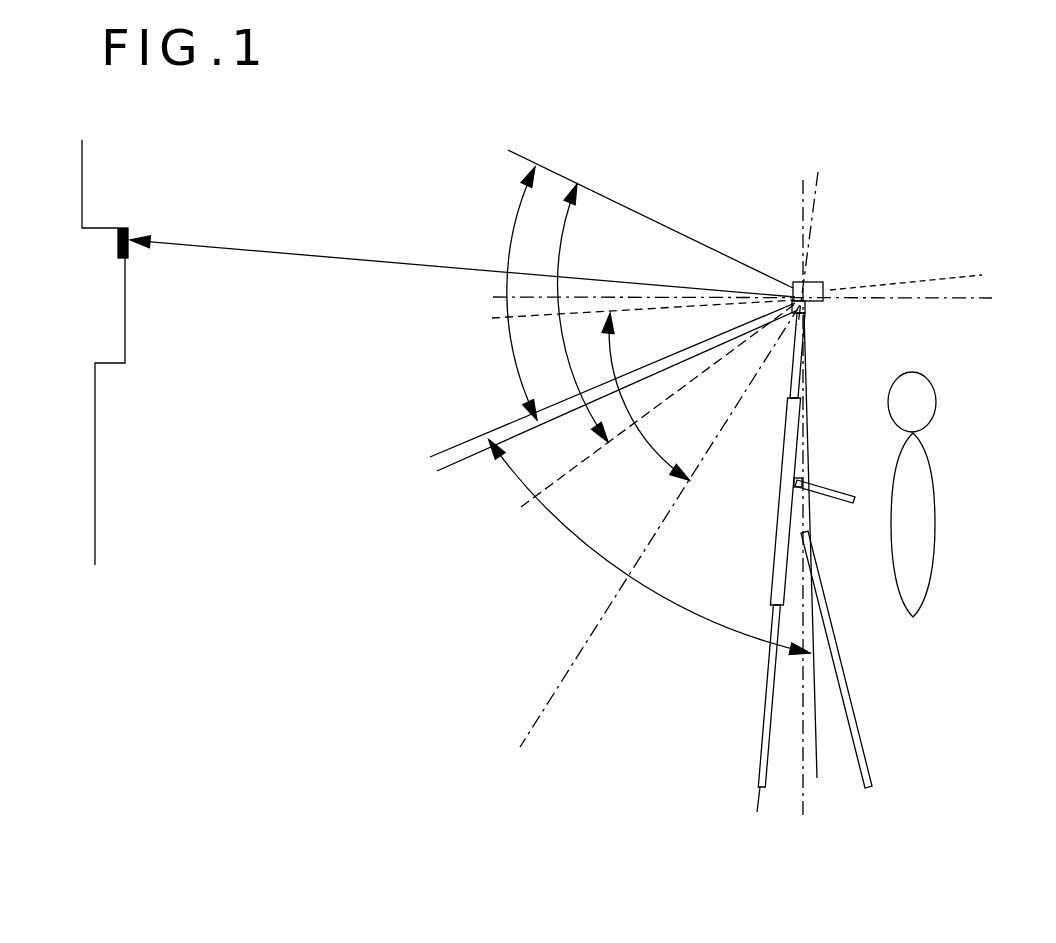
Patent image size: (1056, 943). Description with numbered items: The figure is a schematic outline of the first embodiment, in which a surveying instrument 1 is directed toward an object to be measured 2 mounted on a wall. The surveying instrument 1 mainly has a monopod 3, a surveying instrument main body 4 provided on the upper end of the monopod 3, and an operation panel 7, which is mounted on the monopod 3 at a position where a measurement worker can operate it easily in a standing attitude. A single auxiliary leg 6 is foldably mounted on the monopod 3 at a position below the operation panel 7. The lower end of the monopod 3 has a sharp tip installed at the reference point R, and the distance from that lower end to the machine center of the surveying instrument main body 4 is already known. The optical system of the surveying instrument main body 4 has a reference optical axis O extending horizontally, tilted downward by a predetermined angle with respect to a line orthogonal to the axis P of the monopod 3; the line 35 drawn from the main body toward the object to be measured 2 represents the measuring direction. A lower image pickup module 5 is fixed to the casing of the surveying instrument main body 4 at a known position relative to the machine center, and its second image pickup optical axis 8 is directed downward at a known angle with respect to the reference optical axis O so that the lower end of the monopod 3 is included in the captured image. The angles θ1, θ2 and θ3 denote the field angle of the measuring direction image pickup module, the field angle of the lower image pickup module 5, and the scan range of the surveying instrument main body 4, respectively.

The surveying instrument 1 is at (860, 228).
The object to be measured 2 is at (128, 228).
The monopod 3 is at (777, 520).
The surveying instrument main body 4 is at (797, 282).
The lower image pickup module 5 is at (806, 313).
The auxiliary leg 6 is at (857, 717).
The operation panel 7 is at (835, 507).
The second image pickup optical axis 8 is at (575, 660).
The distance measuring light 35 is at (323, 256).